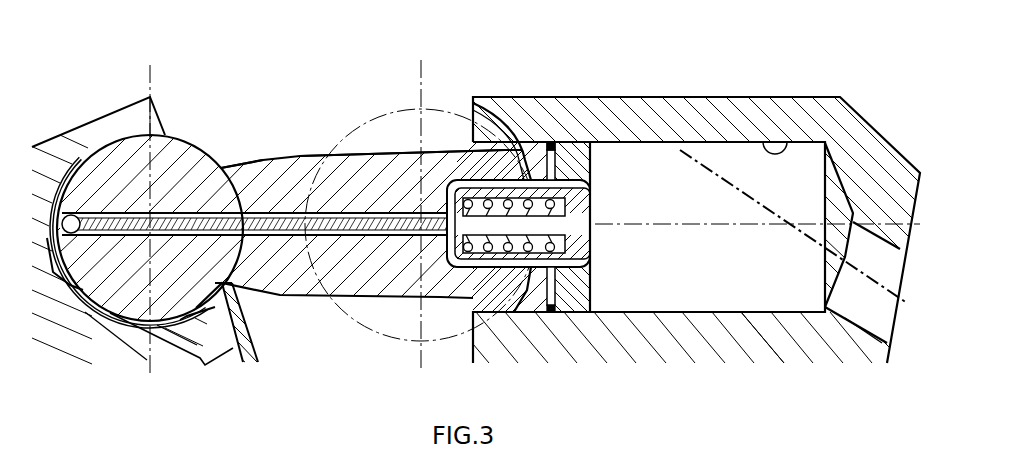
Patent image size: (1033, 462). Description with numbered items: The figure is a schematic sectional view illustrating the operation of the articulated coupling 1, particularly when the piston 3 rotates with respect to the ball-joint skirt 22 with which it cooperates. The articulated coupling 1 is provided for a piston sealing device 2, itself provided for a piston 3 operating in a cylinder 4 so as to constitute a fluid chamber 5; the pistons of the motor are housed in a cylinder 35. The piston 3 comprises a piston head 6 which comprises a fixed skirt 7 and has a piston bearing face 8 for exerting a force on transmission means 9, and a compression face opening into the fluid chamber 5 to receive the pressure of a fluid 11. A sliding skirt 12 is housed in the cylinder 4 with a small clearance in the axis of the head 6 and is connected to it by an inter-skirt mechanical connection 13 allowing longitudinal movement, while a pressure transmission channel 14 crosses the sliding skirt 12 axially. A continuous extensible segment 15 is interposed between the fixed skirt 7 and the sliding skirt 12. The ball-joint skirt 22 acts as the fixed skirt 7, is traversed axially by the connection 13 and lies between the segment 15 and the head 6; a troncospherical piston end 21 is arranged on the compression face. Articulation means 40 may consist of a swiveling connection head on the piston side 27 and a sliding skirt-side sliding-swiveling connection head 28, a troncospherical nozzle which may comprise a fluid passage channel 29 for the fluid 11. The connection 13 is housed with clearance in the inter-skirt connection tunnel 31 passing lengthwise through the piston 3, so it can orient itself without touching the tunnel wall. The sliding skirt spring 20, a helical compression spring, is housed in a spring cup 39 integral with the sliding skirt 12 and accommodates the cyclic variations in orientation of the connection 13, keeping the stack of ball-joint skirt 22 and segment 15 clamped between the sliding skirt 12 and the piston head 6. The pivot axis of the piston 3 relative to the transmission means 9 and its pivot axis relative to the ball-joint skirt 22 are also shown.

The articulated coupling 1 is at (440, 140).
The piston sealing device 2 is at (553, 117).
The piston 3 is at (285, 176).
The cylinder 4 is at (787, 172).
The fluid chamber 5 is at (791, 190).
The piston head 6 is at (335, 166).
The fixed skirt 7 is at (552, 143).
The piston bearing face 8 is at (80, 147).
The transmission means 9 is at (108, 124).
The fluid 11 is at (828, 162).
The sliding skirt 12 is at (583, 176).
The inter-skirt mechanical connection 13 is at (247, 170).
The pressure transmission channel 14 is at (680, 118).
The continuous extensible segment 15 is at (573, 170).
The sliding skirt spring 20 is at (495, 262).
The troncospherical piston end 21 is at (480, 106).
The ball-joint skirt 22 is at (540, 267).
The swiveling connection head on the piston side 27 is at (80, 283).
The sliding skirt-side sliding-swiveling connection head 28 is at (580, 241).
The fluid passage channel 29 is at (583, 210).
The inter-skirt connection tunnel 31 is at (290, 236).
The cylinder 35 is at (763, 334).
The spring cup 39 is at (455, 268).
The articulation means 40 is at (79, 188).